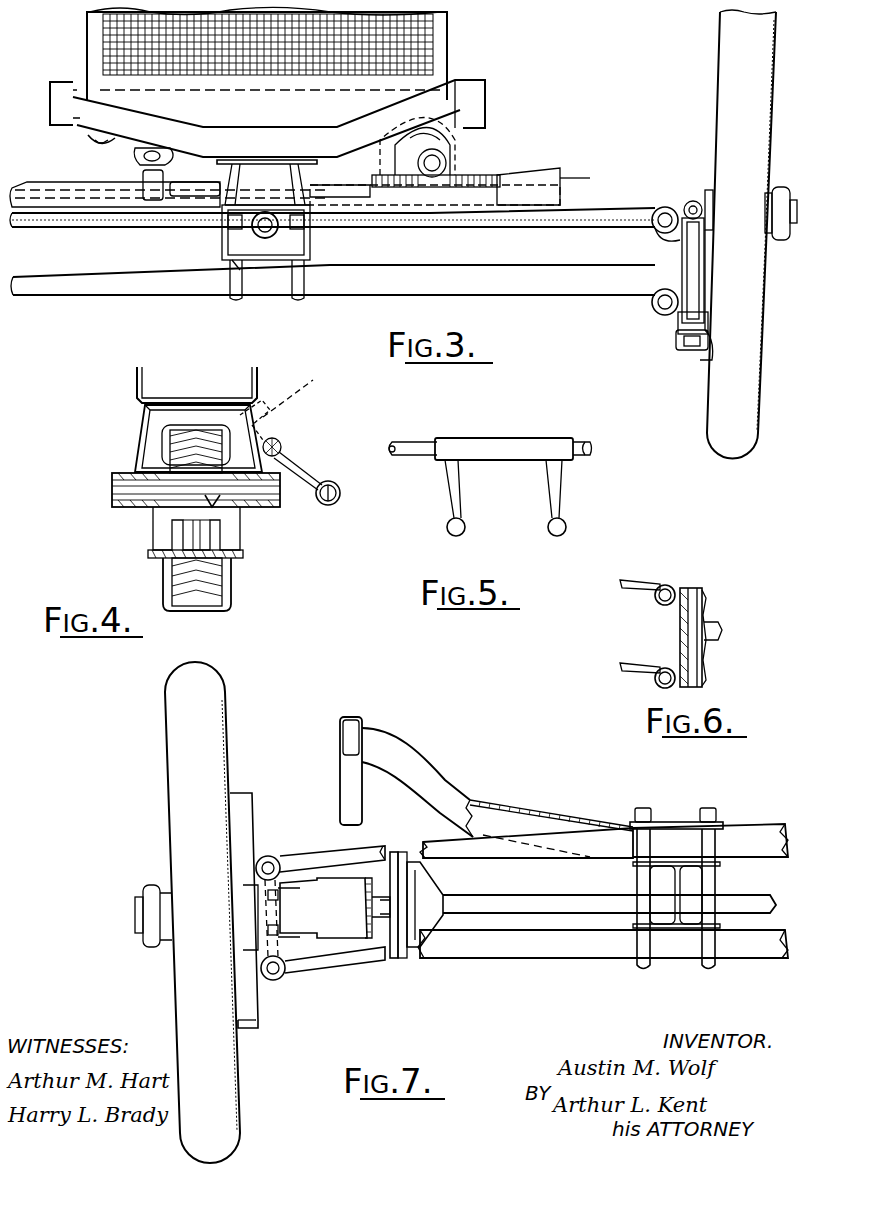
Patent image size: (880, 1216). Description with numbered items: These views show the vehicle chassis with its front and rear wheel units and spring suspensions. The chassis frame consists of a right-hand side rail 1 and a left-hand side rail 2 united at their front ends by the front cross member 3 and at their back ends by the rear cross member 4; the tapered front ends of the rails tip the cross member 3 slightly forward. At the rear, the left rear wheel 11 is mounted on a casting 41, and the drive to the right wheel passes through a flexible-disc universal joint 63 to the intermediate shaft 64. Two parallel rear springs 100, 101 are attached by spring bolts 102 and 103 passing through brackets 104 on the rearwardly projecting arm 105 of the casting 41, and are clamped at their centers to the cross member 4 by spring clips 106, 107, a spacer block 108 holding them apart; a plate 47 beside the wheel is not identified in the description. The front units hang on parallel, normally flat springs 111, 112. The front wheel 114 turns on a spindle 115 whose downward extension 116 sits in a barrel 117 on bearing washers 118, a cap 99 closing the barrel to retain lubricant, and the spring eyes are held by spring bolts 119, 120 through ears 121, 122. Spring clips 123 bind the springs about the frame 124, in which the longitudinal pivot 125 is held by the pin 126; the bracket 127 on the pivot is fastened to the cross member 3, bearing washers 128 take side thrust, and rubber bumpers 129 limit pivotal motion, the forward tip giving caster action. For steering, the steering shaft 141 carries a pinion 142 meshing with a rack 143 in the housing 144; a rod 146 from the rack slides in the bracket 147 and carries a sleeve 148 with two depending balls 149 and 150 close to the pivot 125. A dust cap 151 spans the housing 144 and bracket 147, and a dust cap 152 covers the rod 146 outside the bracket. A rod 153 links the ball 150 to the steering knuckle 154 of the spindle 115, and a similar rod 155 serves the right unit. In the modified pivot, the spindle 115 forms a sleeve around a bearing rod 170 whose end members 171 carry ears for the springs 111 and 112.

In FIG. 3, the right-hand side rail 1 is at (60, 80).
In FIG. 3, the left-hand side rail 2 is at (470, 96).
In FIG. 7, the left-hand side rail 2 is at (337, 780).
In FIG. 3, the front cross member 3 is at (470, 112).
In FIG. 4, the front cross member 3 is at (137, 386).
In FIG. 3, the rear cross member 4 is at (265, 338).
In FIG. 7, the rear cross member 4 is at (427, 785).
In FIG. 7, the left rear wheel 11 is at (227, 701).
In FIG. 7, the casting 41 is at (340, 925).
In FIG. 7, the side plate 47 is at (240, 793).
In FIG. 7, the universal joint 63 is at (400, 960).
In FIG. 7, the intermediate shaft 64 is at (525, 915).
In FIG. 3, the cap 99 is at (700, 352).
In FIG. 7, the rear spring 100 is at (560, 840).
In FIG. 7, the rear spring 101 is at (595, 952).
In FIG. 7, the spring bolt 102 is at (272, 859).
In FIG. 7, the spring bolt 103 is at (275, 981).
In FIG. 7, the brackets 104 is at (300, 920).
In FIG. 7, the rearwardly projecting arm 105 is at (250, 910).
In FIG. 7, the spring clip 106 is at (650, 808).
In FIG. 7, the spring clip 107 is at (712, 808).
In FIG. 7, the spacer block 108 is at (690, 920).
In FIG. 3, the front spring 111 is at (620, 210).
In FIG. 4, the front spring 111 is at (203, 430).
In FIG. 6, the front spring 111 is at (622, 583).
In FIG. 3, the front spring 112 is at (600, 288).
In FIG. 4, the front spring 112 is at (218, 573).
In FIG. 6, the front spring 112 is at (622, 666).
In FIG. 3, the front wheel 114 is at (718, 29).
In FIG. 3, the spindle 115 is at (700, 205).
In FIG. 6, the spindle 115 is at (720, 628).
In FIG. 3, the downward extension 116 is at (680, 270).
In FIG. 3, the barrel 117 is at (683, 268).
In FIG. 3, the bearing washers 118 is at (680, 341).
In FIG. 3, the spring bolt 119 is at (663, 212).
In FIG. 3, the spring bolt 120 is at (655, 311).
In FIG. 3, the ear 121 is at (676, 231).
In FIG. 3, the ear 122 is at (680, 319).
In FIG. 3, the spring clips 123 is at (303, 298).
In FIG. 4, the spring clips 123 is at (228, 599).
In FIG. 3, the frame 124 is at (245, 262).
In FIG. 4, the frame 124 is at (182, 531).
In FIG. 3, the longitudinal pivot 125 is at (268, 237).
In FIG. 4, the longitudinal pivot 125 is at (127, 490).
In FIG. 4, the pin 126 is at (260, 510).
In FIG. 3, the bracket 127 is at (257, 160).
In FIG. 4, the bracket 127 is at (140, 438).
In FIG. 4, the bearing washers 128 is at (227, 528).
In FIG. 3, the rubber bumpers 129 is at (88, 140).
In FIG. 3, the steering shaft 141 is at (440, 150).
In FIG. 3, the pinion 142 is at (455, 180).
In FIG. 3, the rack 143 is at (500, 181).
In FIG. 3, the housing 144 is at (590, 178).
In FIG. 3, the rod 146 is at (355, 195).
In FIG. 5, the rod 146 is at (405, 441).
In FIG. 3, the bracket 147 is at (143, 173).
In FIG. 3, the sleeve 148 is at (203, 195).
In FIG. 4, the sleeve 148 is at (283, 445).
In FIG. 5, the sleeve 148 is at (483, 438).
In FIG. 3, the ball 149 is at (235, 228).
In FIG. 4, the ball 149 is at (324, 476).
In FIG. 5, the ball 149 is at (465, 524).
In FIG. 3, the ball 150 is at (308, 228).
In FIG. 5, the ball 150 is at (567, 524).
In FIG. 3, the dust cap 151 is at (180, 200).
In FIG. 3, the dust cap 152 is at (62, 200).
In FIG. 3, the rod 153 is at (450, 227).
In FIG. 3, the steering knuckle 154 is at (682, 205).
In FIG. 3, the rod 155 is at (130, 198).
In FIG. 6, the bearing rod 170 is at (692, 588).
In FIG. 6, the members 171 is at (705, 597).